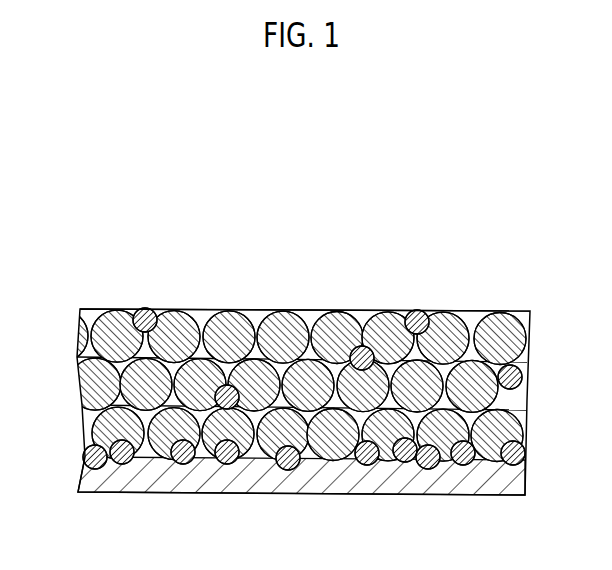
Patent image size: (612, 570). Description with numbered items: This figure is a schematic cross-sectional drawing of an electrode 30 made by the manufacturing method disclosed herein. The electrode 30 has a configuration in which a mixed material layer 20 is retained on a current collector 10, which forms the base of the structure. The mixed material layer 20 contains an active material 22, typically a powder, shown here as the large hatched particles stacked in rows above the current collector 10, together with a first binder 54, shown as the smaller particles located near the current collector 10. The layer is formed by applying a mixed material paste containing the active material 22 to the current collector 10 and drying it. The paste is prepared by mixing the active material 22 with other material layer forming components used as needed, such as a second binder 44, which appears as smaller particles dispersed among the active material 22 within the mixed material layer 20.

The current collector 10 is at (500, 480).
The mixed material layer 20 is at (523, 308).
The active material 22 is at (507, 415).
The electrode 30 is at (73, 292).
The second binder 44 is at (143, 309).
The first binder 54 is at (235, 462).